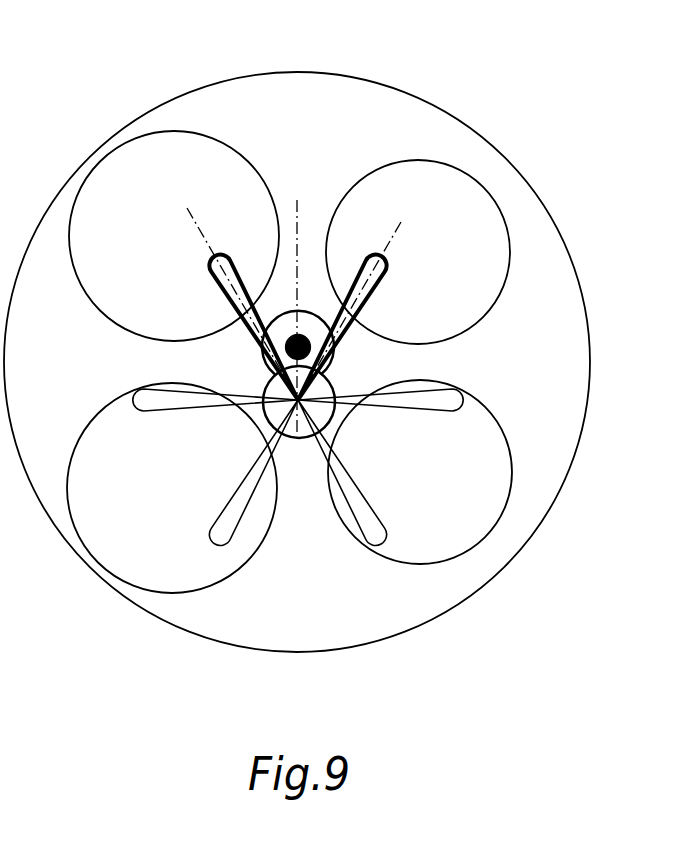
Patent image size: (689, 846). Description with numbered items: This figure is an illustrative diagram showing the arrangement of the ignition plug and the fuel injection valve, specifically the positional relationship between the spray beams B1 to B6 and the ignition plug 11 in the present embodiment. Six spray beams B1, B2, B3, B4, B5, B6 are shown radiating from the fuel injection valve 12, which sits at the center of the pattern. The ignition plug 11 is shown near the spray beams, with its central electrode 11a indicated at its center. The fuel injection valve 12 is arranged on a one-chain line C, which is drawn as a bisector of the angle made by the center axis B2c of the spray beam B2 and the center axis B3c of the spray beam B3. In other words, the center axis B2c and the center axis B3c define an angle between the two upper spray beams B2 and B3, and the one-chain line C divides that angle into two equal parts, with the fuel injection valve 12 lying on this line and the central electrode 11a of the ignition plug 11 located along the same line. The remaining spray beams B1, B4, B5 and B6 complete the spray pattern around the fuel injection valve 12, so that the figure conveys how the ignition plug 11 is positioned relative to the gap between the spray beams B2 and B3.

The ignition plug 11 is at (306, 388).
The central electrode 11a is at (300, 340).
The fuel injection valve 12 is at (300, 425).
The one-chain line C is at (298, 301).
The spray beam B1 is at (211, 417).
The spray beam B2 is at (235, 327).
The spray beam B3 is at (360, 327).
The spray beam B4 is at (385, 418).
The spray beam B5 is at (360, 473).
The spray beam B6 is at (237, 480).
The center axis of the spray beam B2 B2c is at (224, 290).
The center axis of the spray beam B3 B3c is at (374, 298).